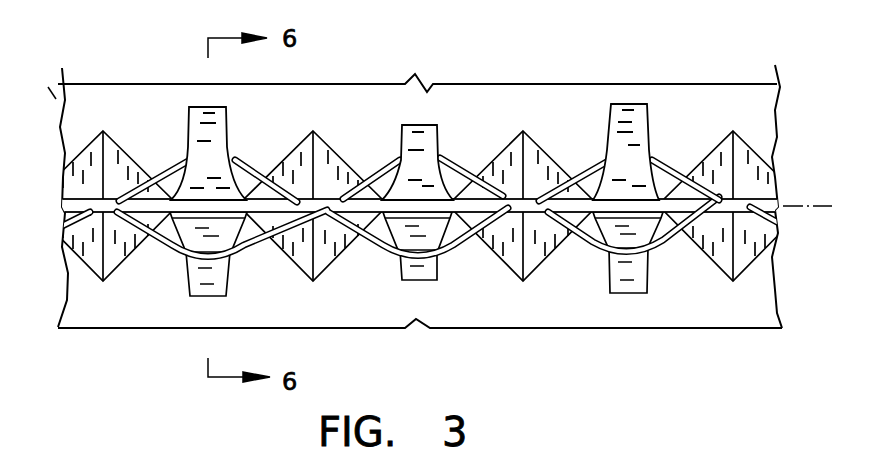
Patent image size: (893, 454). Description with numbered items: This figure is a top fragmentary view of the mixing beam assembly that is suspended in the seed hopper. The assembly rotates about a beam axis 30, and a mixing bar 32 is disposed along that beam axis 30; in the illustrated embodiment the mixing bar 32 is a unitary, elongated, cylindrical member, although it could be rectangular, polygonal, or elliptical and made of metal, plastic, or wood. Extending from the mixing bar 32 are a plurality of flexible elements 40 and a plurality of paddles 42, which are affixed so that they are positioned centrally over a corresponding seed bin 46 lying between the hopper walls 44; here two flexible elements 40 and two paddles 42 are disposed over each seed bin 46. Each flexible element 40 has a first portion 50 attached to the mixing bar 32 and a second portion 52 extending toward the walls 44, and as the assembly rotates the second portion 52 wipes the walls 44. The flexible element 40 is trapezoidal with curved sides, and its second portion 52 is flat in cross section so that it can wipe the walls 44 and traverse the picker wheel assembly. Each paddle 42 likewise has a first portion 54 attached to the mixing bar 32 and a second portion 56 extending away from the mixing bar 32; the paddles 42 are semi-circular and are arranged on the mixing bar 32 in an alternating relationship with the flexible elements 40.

The beam axis 30 is at (807, 192).
The mixing bar 32 is at (110, 207).
The flexible element 40 is at (653, 140).
The paddle 42 is at (457, 162).
The wall 44 is at (362, 108).
The seed bin 46 is at (570, 252).
The first portion 50 is at (603, 216).
The second portion 52 is at (630, 293).
The first portion 54 is at (281, 158).
The second portion 56 is at (213, 258).